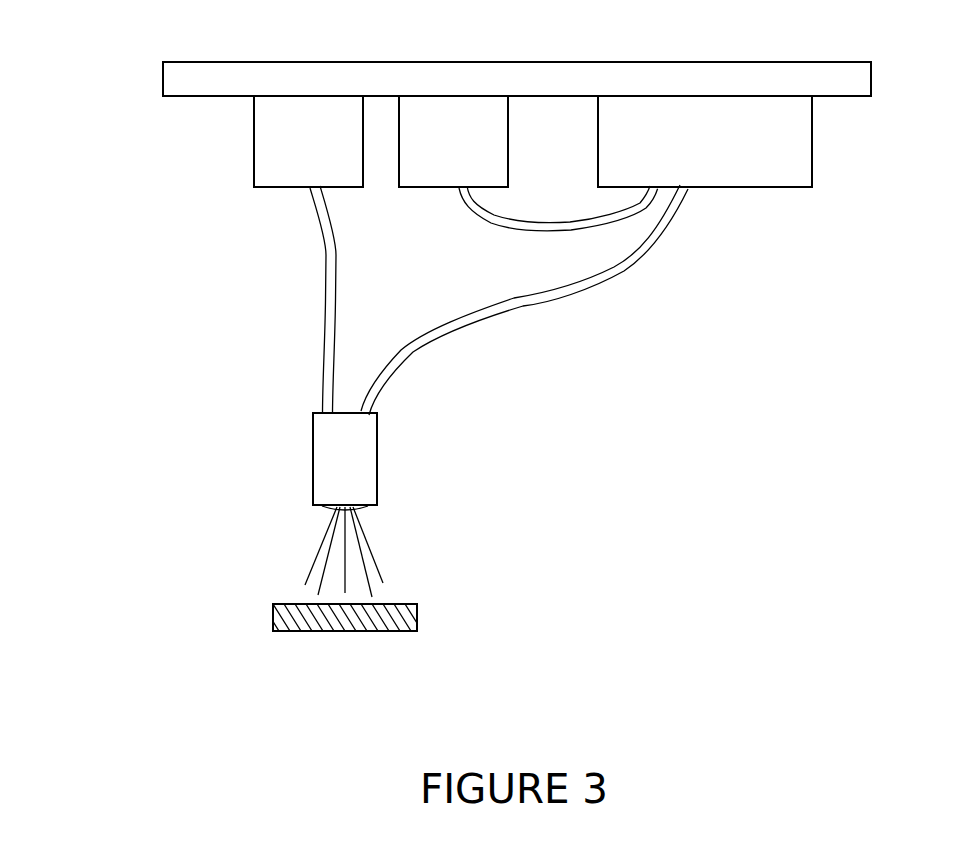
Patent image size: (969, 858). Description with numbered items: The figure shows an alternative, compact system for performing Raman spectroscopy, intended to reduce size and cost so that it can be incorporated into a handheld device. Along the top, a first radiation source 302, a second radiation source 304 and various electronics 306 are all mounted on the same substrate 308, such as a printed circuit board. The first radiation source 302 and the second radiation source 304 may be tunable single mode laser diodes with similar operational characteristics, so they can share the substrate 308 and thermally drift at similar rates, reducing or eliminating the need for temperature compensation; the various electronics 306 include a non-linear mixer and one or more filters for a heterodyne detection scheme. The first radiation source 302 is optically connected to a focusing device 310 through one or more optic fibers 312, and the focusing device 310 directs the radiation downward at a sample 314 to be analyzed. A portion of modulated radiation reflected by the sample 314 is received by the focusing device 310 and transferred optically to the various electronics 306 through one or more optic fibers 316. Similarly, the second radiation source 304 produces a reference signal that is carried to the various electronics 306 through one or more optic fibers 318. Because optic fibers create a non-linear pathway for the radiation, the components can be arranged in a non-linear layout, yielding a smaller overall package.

The first radiation source 302 is at (308, 141).
The second radiation source 304 is at (453, 141).
The various electronics 306 is at (705, 141).
The substrate 308 is at (207, 62).
The focusing device 310 is at (344, 505).
The optic fiber 312 is at (338, 298).
The sample 314 is at (382, 631).
The optic fiber 316 is at (493, 321).
The optic fiber 318 is at (553, 226).